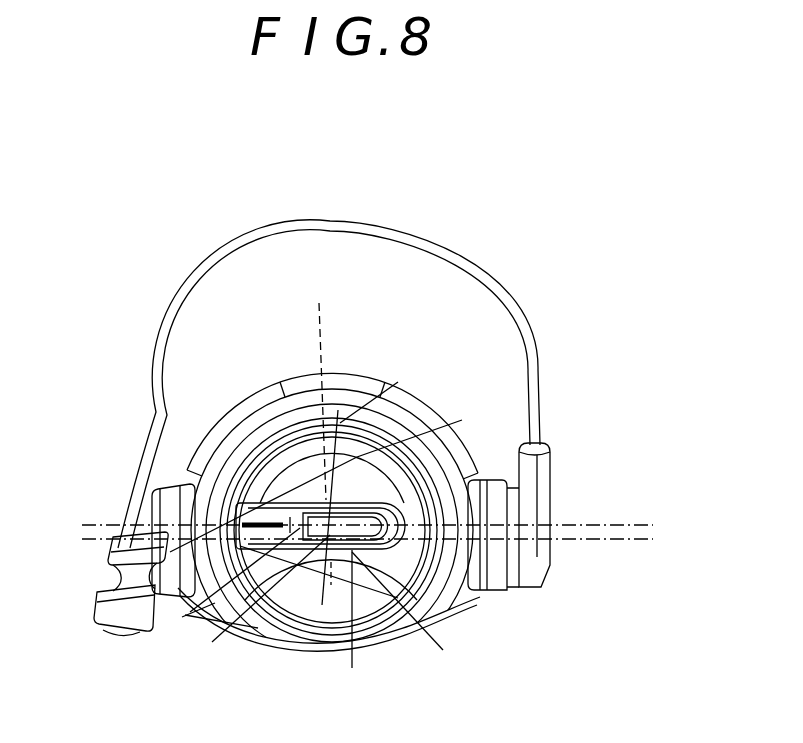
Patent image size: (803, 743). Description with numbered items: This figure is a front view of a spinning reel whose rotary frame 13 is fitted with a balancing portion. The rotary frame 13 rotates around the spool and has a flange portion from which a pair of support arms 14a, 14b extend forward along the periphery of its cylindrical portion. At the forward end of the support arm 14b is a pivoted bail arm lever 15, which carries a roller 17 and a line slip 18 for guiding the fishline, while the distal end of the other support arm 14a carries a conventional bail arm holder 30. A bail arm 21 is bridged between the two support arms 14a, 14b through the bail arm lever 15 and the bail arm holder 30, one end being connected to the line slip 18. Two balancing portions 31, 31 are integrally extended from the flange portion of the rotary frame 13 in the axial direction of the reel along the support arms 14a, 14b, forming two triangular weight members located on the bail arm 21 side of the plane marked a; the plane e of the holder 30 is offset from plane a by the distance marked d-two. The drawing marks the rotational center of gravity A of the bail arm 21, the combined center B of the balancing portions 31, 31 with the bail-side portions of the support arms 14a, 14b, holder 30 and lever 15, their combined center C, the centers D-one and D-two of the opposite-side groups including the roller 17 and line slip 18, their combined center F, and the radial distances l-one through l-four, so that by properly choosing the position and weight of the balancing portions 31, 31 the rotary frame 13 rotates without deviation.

The rotary frame 13 is at (357, 380).
The support arm 14a is at (500, 592).
The support arm 14b is at (175, 585).
The bail arm lever 15 is at (103, 607).
The roller 17 is at (118, 581).
The line slip 18 is at (128, 538).
The bail arm 21 is at (392, 228).
The bail arm holder 30 is at (530, 578).
The balancing portion 31 is at (252, 386).